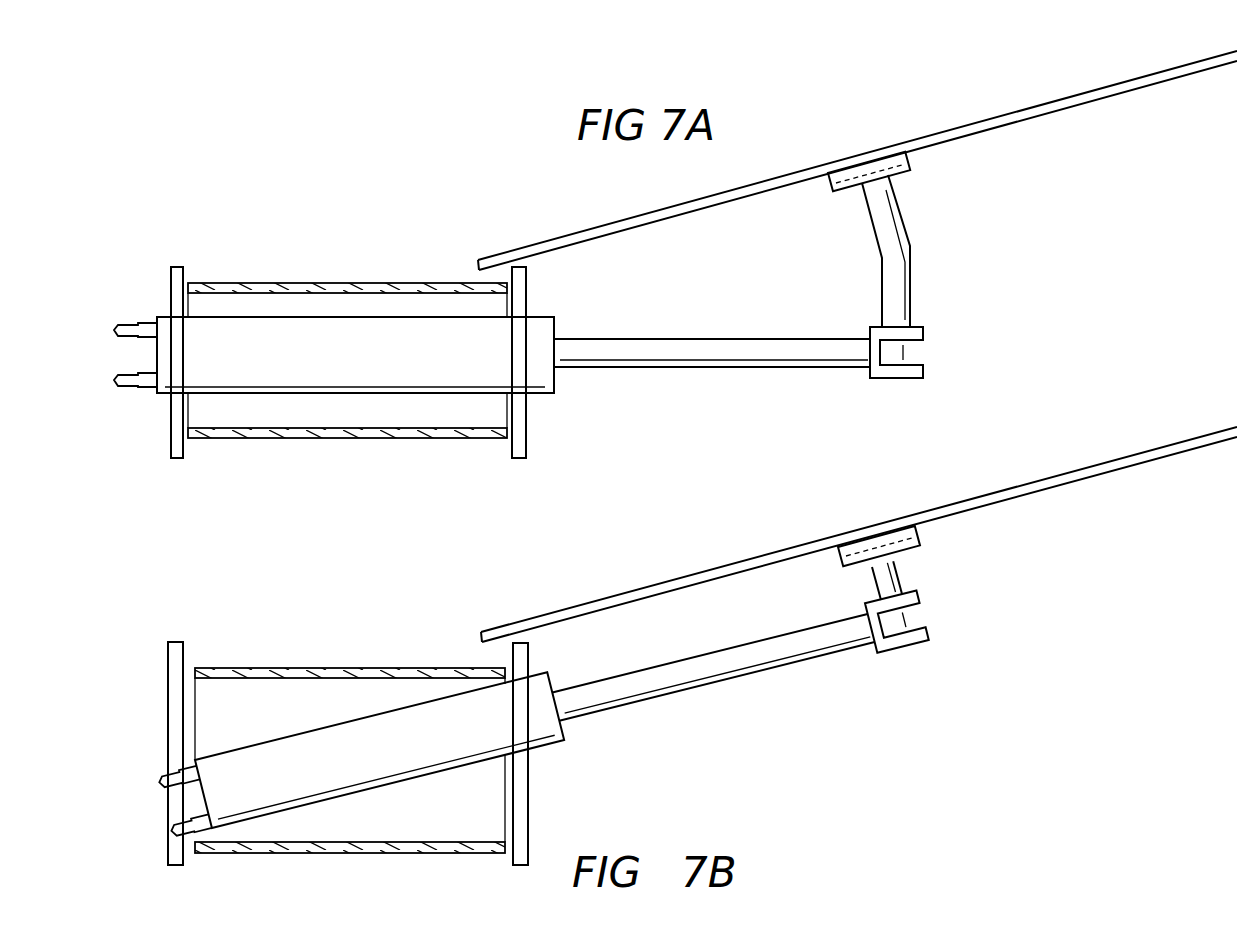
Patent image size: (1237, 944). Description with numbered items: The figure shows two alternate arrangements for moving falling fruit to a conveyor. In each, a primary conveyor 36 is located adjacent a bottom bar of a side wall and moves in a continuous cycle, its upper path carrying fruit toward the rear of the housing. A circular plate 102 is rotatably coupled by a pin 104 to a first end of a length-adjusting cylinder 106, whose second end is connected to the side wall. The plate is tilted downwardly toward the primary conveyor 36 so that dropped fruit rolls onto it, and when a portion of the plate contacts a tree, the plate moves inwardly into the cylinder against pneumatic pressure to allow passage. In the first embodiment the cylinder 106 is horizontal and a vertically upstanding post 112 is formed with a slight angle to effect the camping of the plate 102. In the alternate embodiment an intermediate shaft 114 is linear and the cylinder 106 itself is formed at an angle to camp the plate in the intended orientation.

In FIG. 7A, the primary conveyor 36 is at (253, 285).
In FIG. 7B, the primary conveyor 36 is at (252, 668).
In FIG. 7A, the circular plate 102 is at (1092, 88).
In FIG. 7B, the circular plate 102 is at (1153, 448).
In FIG. 7A, the pin 104 is at (870, 173).
In FIG. 7B, the pin 104 is at (879, 546).
In FIG. 7A, the length-adjusting cylinder 106 is at (708, 358).
In FIG. 7B, the length-adjusting cylinder 106 is at (700, 684).
In FIG. 7A, the vertically upstanding post 112 is at (907, 245).
In FIG. 7B, the intermediate shaft 114 is at (898, 582).